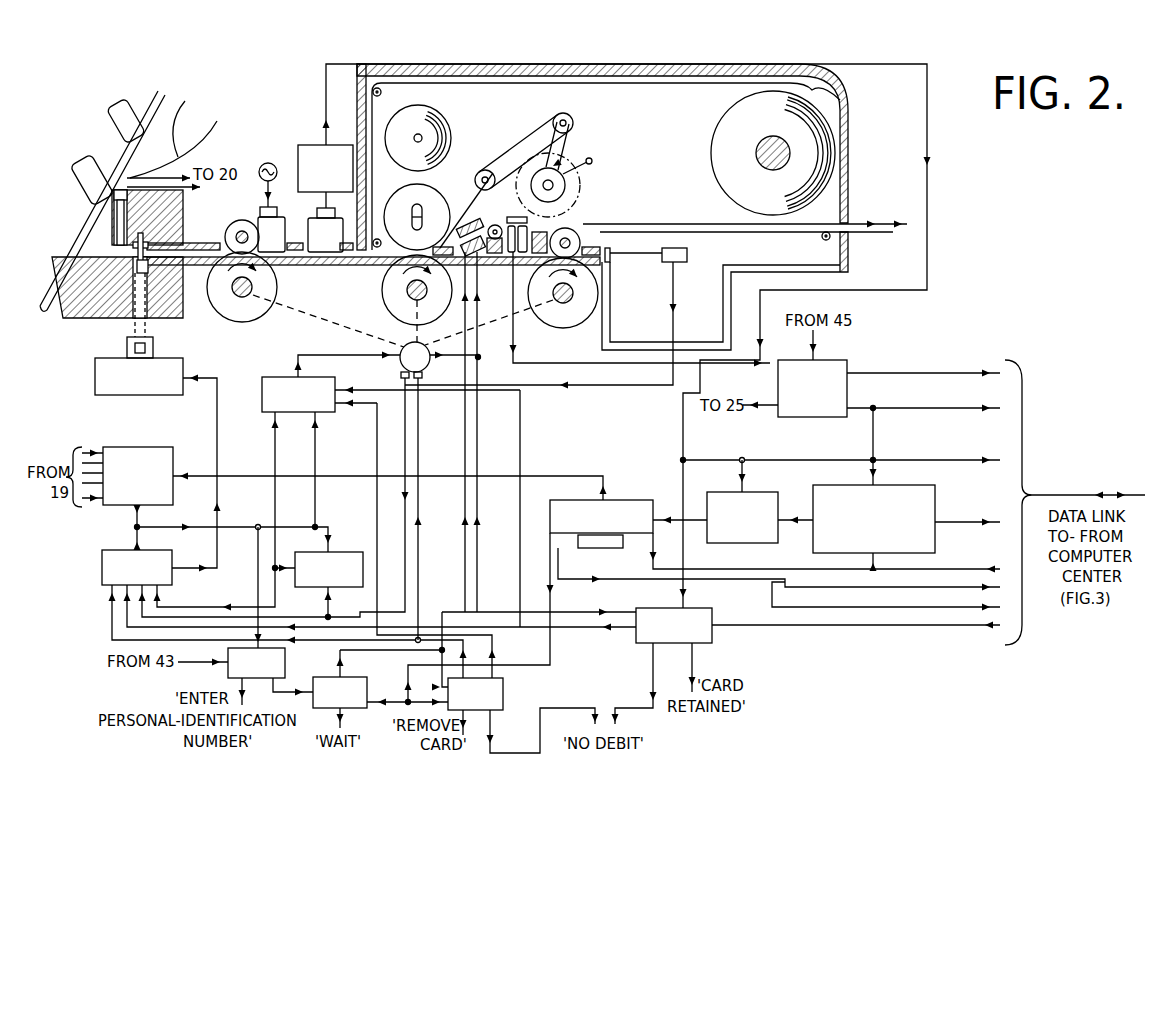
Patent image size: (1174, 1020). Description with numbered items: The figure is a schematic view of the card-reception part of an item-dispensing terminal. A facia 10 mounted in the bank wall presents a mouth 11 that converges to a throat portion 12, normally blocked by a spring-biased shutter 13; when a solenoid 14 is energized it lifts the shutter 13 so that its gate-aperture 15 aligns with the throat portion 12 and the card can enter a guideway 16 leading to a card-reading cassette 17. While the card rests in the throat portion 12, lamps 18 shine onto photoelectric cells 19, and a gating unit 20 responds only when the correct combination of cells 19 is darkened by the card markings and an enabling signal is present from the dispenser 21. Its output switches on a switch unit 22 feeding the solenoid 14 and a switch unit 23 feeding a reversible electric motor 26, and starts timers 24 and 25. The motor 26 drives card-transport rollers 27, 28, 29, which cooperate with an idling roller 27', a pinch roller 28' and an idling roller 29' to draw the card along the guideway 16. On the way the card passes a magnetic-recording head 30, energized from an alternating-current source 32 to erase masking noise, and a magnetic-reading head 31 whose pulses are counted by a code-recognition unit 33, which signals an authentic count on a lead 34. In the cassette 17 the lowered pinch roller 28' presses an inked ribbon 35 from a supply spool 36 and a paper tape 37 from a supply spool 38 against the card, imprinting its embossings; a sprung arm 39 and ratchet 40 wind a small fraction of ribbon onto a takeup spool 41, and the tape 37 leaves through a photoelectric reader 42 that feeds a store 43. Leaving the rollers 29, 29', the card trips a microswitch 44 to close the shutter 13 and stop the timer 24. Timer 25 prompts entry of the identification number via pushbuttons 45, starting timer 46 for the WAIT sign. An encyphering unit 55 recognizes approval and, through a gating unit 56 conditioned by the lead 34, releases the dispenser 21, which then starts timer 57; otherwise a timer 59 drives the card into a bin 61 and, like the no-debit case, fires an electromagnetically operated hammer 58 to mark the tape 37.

The facia 10 is at (176, 108).
The mouth 11 is at (95, 248).
The throat portion 12 is at (113, 262).
The shutter 13 is at (135, 334).
The solenoid 14 is at (95, 390).
The gate-aperture 15 is at (128, 262).
The guideway 16 is at (202, 258).
The card-reading cassette 17 is at (670, 170).
The lamp 18 is at (110, 203).
The photoelectric cell 19 is at (115, 223).
The gating unit 20 is at (140, 447).
The dispenser 21 is at (623, 500).
The switch unit 22 is at (102, 562).
The switch unit 23 is at (267, 377).
The timer 24 is at (345, 550).
The timer 25 is at (287, 660).
The reversible electric motor 26 is at (402, 347).
The card-transport roller 27 is at (248, 299).
The idling roller 27' is at (224, 233).
The card-transport roller 28 is at (396, 290).
The pinch roller 28' is at (472, 197).
The card-transport roller 29 is at (563, 307).
The idling roller 29' is at (601, 230).
The magnetic-recording head 30 is at (262, 215).
The magnetic-reading head 31 is at (313, 222).
The source 32 is at (272, 163).
The code-recognition unit 33 is at (317, 145).
The lead 34 is at (326, 93).
The inked ribbon 35 is at (437, 197).
The supply spool 36 is at (440, 122).
The paper tape 37 is at (357, 97).
The supply spool 38 is at (738, 192).
The sprung arm 39 is at (527, 148).
The ratchet 40 is at (577, 158).
The takeup spool 41 is at (568, 187).
The photoelectric reader 42 is at (497, 232).
The store 43 is at (847, 364).
The microswitch 44 is at (687, 255).
The pushbutton 45 is at (90, 167).
The timer 46 is at (353, 677).
The encyphering unit 55 is at (850, 555).
The gating unit 56 is at (732, 545).
The timer 57 is at (505, 694).
The electromagnetically operated hammer 58 is at (482, 221).
The timer 59 is at (712, 610).
The bin 61 is at (648, 316).